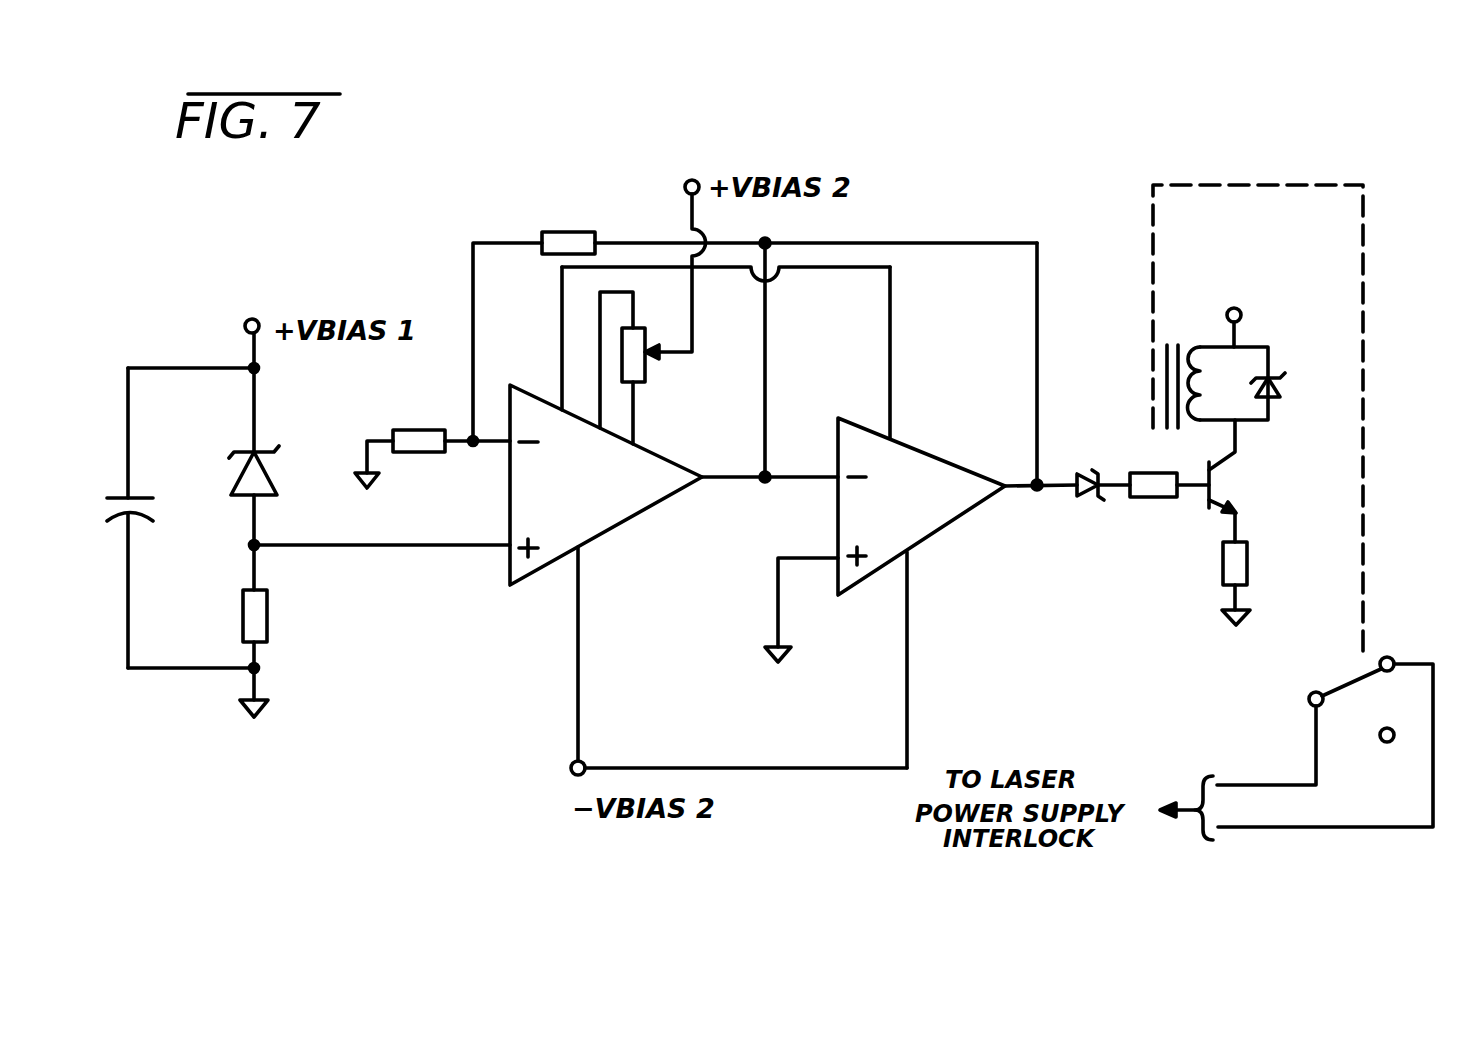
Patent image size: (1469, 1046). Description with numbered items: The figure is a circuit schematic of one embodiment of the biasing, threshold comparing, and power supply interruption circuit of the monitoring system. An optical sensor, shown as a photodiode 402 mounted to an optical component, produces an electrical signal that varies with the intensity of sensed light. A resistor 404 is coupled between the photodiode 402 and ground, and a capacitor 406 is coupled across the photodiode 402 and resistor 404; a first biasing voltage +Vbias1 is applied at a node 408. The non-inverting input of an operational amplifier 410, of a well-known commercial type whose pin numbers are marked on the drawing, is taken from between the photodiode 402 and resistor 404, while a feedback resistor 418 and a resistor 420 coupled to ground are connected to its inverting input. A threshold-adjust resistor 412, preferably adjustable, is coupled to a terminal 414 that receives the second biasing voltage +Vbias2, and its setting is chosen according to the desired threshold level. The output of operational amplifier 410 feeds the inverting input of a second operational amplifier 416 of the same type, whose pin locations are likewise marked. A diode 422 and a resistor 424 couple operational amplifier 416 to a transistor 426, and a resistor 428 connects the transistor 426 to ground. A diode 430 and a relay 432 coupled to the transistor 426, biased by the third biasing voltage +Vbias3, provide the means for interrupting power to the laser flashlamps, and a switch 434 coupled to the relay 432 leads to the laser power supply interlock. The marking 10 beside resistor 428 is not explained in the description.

The photodiode 402 is at (268, 446).
The resistor 404 is at (268, 616).
The capacitor 406 is at (143, 495).
The node 408 is at (246, 320).
The operational amplifier 410 is at (531, 573).
The threshold-adjust resistor 412 is at (650, 370).
The terminal 414 is at (697, 180).
The operational amplifier 416 is at (963, 516).
The feedback resistor 418 is at (565, 232).
The resistor 420 is at (415, 430).
The diode 422 is at (1100, 498).
The resistor 424 is at (1145, 472).
The transistor 426 is at (1233, 456).
The resistor 428 is at (1220, 562).
The diode 430 is at (1270, 377).
The relay 432 is at (1133, 378).
The switch 434 is at (1328, 665).
The resistor value / element 10 is at (1258, 586).